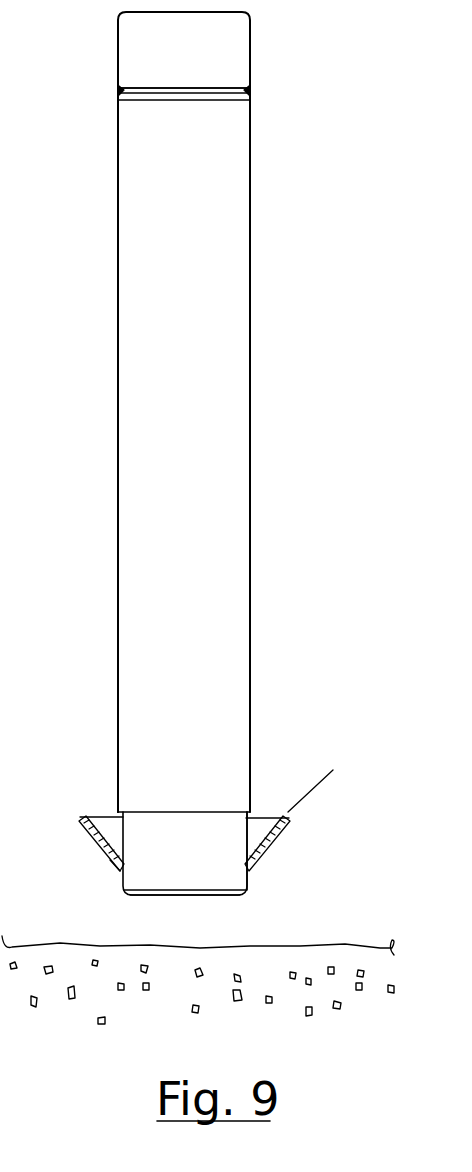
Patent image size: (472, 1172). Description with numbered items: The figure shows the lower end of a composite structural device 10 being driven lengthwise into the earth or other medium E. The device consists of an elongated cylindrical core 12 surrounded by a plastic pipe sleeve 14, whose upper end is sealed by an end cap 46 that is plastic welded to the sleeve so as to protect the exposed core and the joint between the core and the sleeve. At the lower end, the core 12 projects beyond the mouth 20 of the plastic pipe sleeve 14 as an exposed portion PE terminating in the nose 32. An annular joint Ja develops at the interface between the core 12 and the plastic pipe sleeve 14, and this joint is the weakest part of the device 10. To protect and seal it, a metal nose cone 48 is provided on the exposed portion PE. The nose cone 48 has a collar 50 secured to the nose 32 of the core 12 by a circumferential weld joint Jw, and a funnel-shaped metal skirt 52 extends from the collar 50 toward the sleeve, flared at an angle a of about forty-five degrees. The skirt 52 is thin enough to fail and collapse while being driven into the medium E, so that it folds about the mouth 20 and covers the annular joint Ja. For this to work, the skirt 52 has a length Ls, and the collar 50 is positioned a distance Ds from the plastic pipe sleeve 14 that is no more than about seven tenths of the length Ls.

The composite structural device 10 is at (251, 567).
The end cap 46 is at (194, 61).
The plastic pipe sleeve 14 is at (200, 757).
The core 12 is at (163, 893).
The nose 32 is at (190, 893).
The mouth 20 is at (213, 813).
The metal nose cone 48 is at (98, 815).
The funnel-shaped metal skirt 52 is at (297, 834).
The collar 50 is at (119, 866).
The exposed portion of the core PE is at (147, 828).
The distance from the collar to the plastic pipe sleeve Ds is at (43, 813).
The circumferential weld joint Jw is at (117, 881).
The annular joint Ja is at (200, 817).
The flare angle of the skirt a is at (323, 780).
The skirt length Ls is at (257, 868).
The earth or other medium E is at (360, 945).